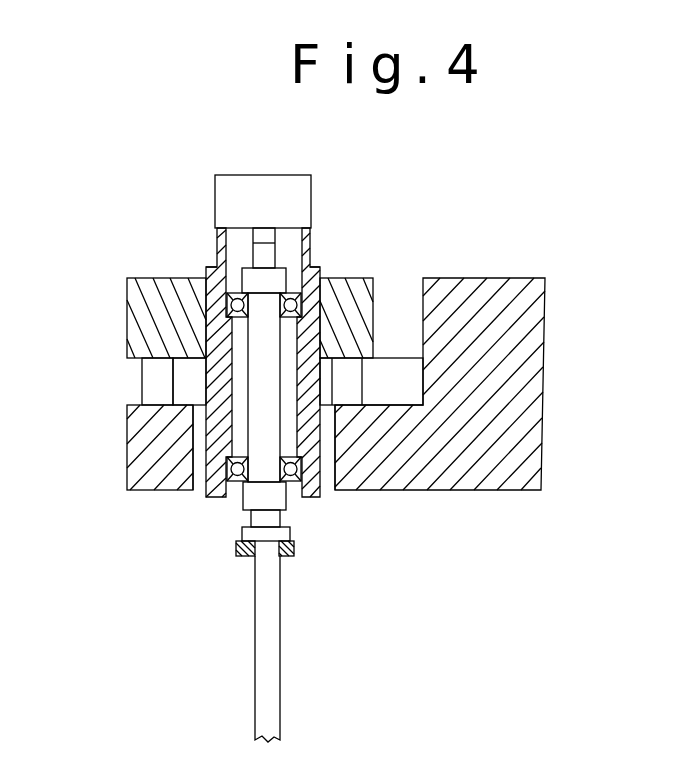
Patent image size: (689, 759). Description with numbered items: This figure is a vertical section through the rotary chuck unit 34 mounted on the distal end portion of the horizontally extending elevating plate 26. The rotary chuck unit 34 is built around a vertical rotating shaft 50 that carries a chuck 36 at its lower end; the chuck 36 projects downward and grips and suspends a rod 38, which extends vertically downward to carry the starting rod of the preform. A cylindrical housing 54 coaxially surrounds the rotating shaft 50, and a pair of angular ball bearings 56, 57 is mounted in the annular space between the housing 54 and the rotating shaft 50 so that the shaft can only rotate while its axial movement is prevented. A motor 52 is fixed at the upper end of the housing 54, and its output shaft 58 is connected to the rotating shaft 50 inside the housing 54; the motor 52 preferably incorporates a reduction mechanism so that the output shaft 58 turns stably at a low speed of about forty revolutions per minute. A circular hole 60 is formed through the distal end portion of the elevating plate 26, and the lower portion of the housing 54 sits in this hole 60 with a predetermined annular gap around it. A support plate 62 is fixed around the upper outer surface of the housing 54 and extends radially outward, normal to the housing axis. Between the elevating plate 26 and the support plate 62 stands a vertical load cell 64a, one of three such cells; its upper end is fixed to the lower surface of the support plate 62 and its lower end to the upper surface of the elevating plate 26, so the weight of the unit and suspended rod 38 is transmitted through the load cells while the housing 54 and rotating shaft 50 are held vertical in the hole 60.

The elevating plate 26 is at (480, 463).
The rotary chuck unit 34 is at (247, 357).
The chuck 36 is at (290, 556).
The rod 38 is at (270, 648).
The rotating shaft 50 is at (263, 447).
The motor 52 is at (284, 190).
The cylindrical housing 54 is at (317, 276).
The angular ball bearing 56 is at (236, 295).
The angular ball bearing 57 is at (243, 462).
The output shaft 58 is at (277, 240).
The circular hole 60 is at (328, 475).
The support plate 62 is at (352, 307).
The load cell 64a is at (153, 385).